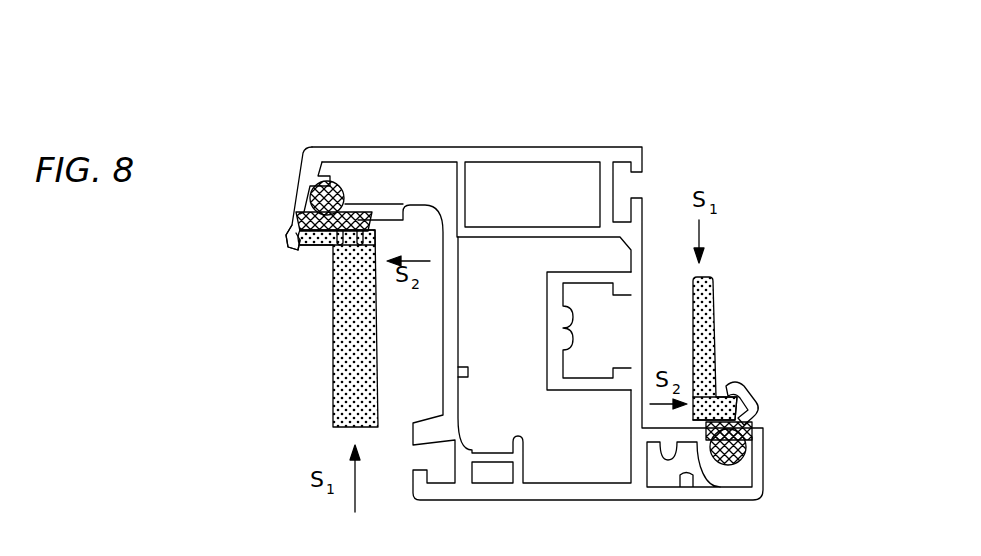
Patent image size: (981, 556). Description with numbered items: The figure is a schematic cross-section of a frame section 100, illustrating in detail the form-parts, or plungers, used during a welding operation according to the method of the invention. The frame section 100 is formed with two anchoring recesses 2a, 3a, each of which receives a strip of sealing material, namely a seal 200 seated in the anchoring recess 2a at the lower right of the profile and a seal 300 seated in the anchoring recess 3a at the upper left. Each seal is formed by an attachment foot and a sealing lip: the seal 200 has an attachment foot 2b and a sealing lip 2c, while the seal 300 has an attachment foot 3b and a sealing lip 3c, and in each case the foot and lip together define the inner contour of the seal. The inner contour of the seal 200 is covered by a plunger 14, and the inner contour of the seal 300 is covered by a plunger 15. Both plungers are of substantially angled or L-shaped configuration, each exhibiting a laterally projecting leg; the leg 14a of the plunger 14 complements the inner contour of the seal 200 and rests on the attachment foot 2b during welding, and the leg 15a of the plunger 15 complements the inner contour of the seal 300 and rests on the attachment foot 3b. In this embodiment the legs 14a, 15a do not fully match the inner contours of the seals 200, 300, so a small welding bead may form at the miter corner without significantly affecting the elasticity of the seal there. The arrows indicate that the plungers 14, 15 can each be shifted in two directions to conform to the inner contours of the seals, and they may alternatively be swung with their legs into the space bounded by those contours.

The frame section 100 is at (540, 140).
The seal 300 is at (290, 176).
The anchoring recess 3a is at (331, 192).
The attachment foot 3b is at (313, 207).
The sealing lip 3c is at (284, 229).
The plunger 15 is at (357, 348).
The laterally projecting leg 15a is at (313, 253).
The plunger 14 is at (710, 290).
The laterally projecting leg 14a is at (713, 400).
The seal 200 is at (791, 432).
The anchoring recess 2a is at (728, 455).
The attachment foot 2b is at (745, 438).
The sealing lip 2c is at (736, 390).